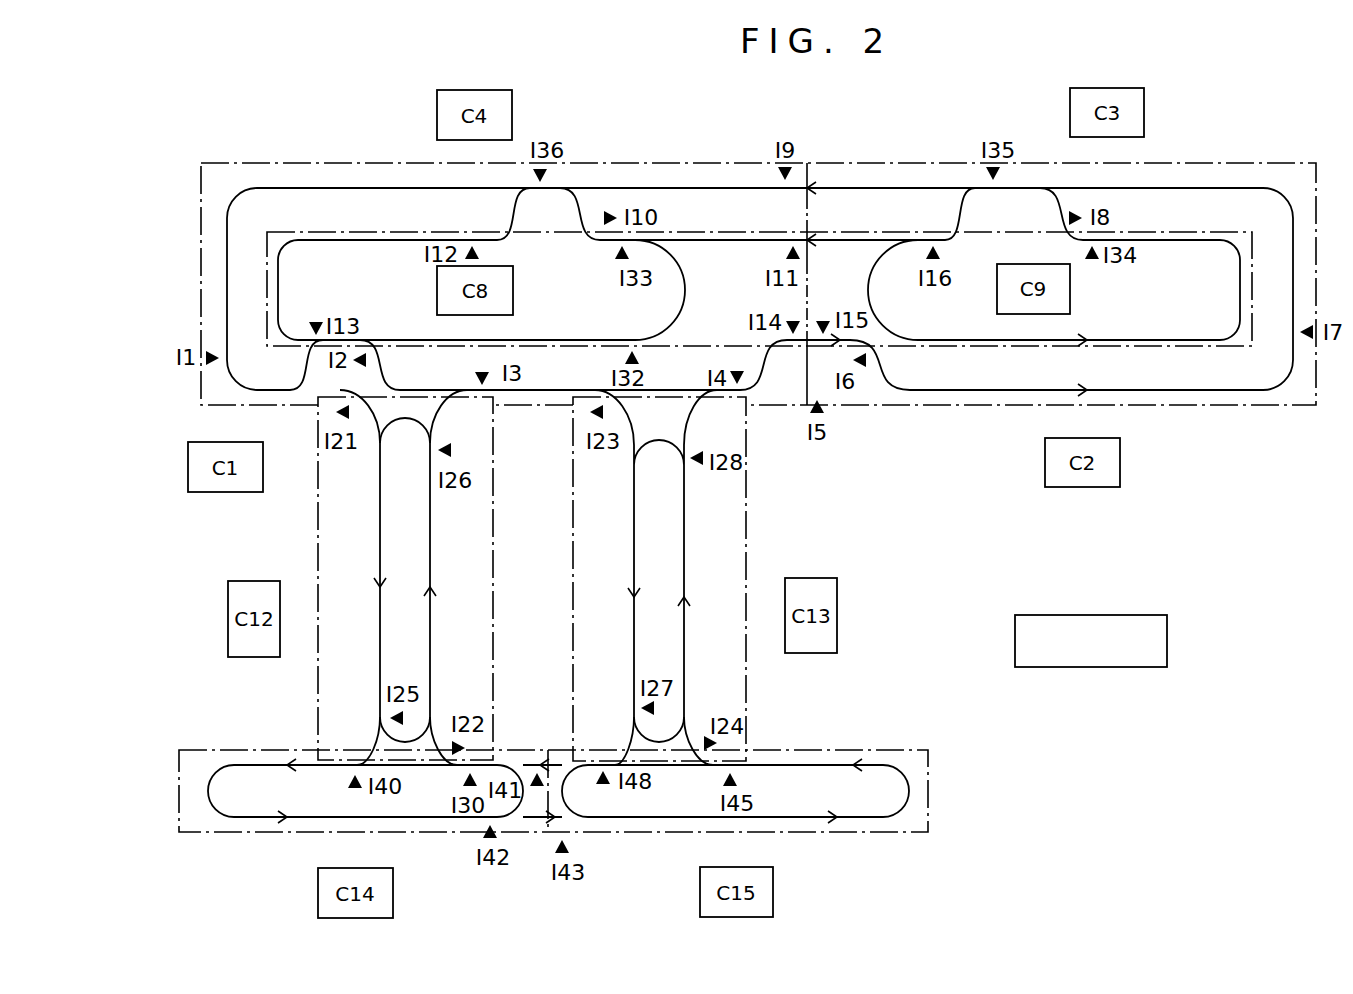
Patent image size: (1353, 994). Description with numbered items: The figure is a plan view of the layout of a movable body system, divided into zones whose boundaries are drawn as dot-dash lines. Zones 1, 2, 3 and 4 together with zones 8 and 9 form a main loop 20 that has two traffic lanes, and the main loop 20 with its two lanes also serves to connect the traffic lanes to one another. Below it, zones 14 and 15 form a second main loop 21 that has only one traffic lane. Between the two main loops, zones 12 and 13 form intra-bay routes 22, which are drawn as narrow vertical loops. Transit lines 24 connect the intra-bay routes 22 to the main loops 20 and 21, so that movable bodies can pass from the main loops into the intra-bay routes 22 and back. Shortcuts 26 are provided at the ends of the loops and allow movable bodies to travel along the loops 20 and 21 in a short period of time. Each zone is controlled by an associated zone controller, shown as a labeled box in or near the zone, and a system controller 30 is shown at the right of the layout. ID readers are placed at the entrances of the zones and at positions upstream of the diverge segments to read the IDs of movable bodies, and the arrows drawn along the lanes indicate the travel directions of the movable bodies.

The zone 1 is at (540, 362).
The zone 2 is at (1217, 372).
The zone 3 is at (1222, 170).
The zone 4 is at (682, 168).
The zone 8 is at (553, 284).
The zone 9 is at (1132, 290).
The zone 12 is at (333, 537).
The zone 13 is at (728, 536).
The zone 14 is at (437, 826).
The zone 15 is at (862, 823).
The main loop 20 is at (1165, 232).
The main loop 21 is at (807, 762).
The intra-bay loop 22 is at (432, 637).
The transit line 24 is at (492, 222).
The shortcut 26 is at (685, 290).
The controller 30 is at (1168, 638).